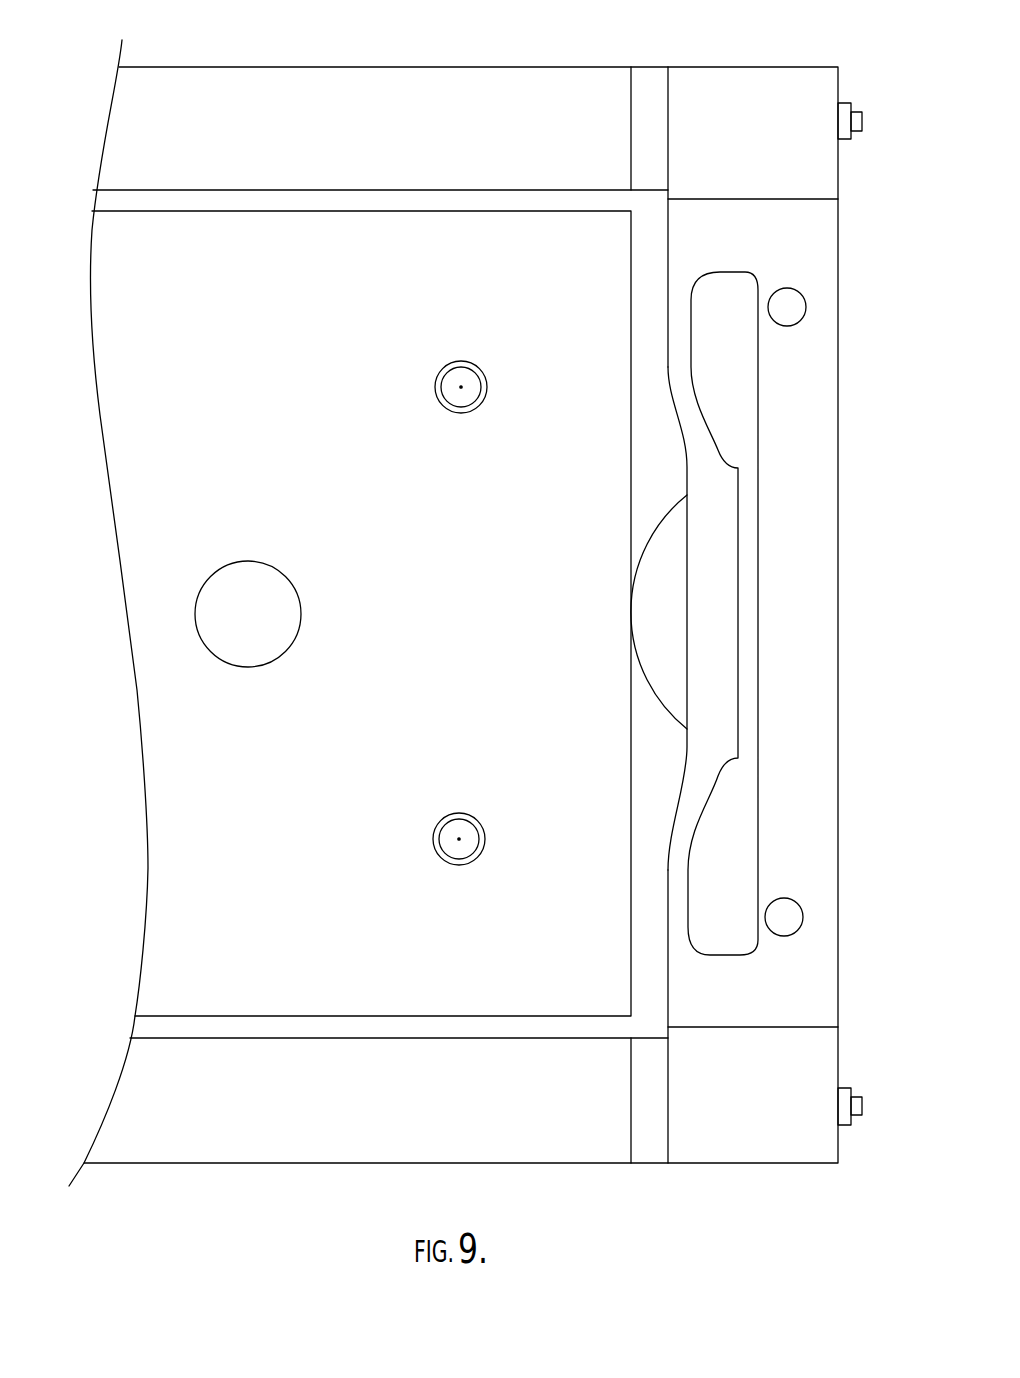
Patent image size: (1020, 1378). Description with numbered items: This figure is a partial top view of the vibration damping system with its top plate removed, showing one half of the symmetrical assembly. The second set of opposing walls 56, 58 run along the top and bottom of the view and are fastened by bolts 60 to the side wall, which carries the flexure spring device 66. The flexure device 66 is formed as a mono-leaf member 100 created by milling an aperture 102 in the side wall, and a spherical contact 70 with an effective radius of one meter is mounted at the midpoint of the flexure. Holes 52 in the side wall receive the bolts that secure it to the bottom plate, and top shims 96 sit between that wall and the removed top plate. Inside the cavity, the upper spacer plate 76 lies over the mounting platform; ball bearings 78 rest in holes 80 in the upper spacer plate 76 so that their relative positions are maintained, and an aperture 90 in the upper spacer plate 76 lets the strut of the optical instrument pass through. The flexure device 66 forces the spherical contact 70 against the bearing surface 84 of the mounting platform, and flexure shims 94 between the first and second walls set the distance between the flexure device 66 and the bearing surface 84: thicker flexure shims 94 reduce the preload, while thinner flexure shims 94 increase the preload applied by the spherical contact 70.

The holes 52 is at (804, 297).
The opposing wall 56 is at (480, 80).
The opposing wall 58 is at (550, 1135).
The bolts 60 is at (863, 118).
The flexure spring device 66 is at (728, 618).
The spherical contact 70 is at (670, 552).
The upper spacer plate 76 is at (408, 222).
The ball bearings 78 is at (470, 390).
The holes 80 is at (477, 365).
The bearing surface 84 is at (631, 457).
The aperture 90 is at (206, 645).
The flexure shims 94 is at (653, 78).
The top shims 96 is at (823, 953).
The mono-leaf member 100 is at (727, 573).
The aperture 102 is at (744, 388).